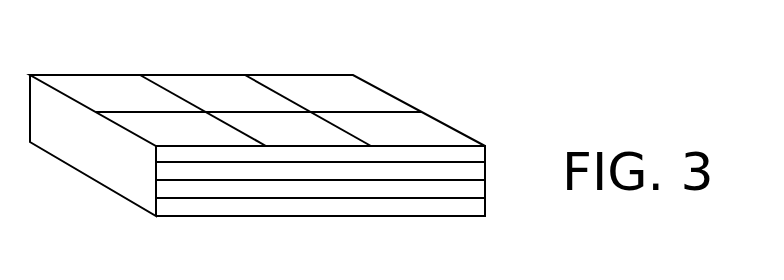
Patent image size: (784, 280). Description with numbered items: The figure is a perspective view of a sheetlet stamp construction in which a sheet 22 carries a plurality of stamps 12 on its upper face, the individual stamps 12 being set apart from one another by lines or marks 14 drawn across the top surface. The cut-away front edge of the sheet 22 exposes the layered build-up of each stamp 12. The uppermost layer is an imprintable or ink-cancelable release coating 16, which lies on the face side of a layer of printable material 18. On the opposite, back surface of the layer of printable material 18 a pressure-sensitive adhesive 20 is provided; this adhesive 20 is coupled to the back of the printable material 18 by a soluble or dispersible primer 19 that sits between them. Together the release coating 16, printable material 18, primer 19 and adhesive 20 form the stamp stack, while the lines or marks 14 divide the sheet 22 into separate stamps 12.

The stamp 12 is at (326, 86).
The lines or marks 14 is at (272, 88).
The release coating 16 is at (488, 153).
The layer of printable material 18 is at (481, 172).
The primer 19 is at (481, 188).
The pressure-sensitive adhesive 20 is at (481, 208).
The sheet 22 is at (153, 75).